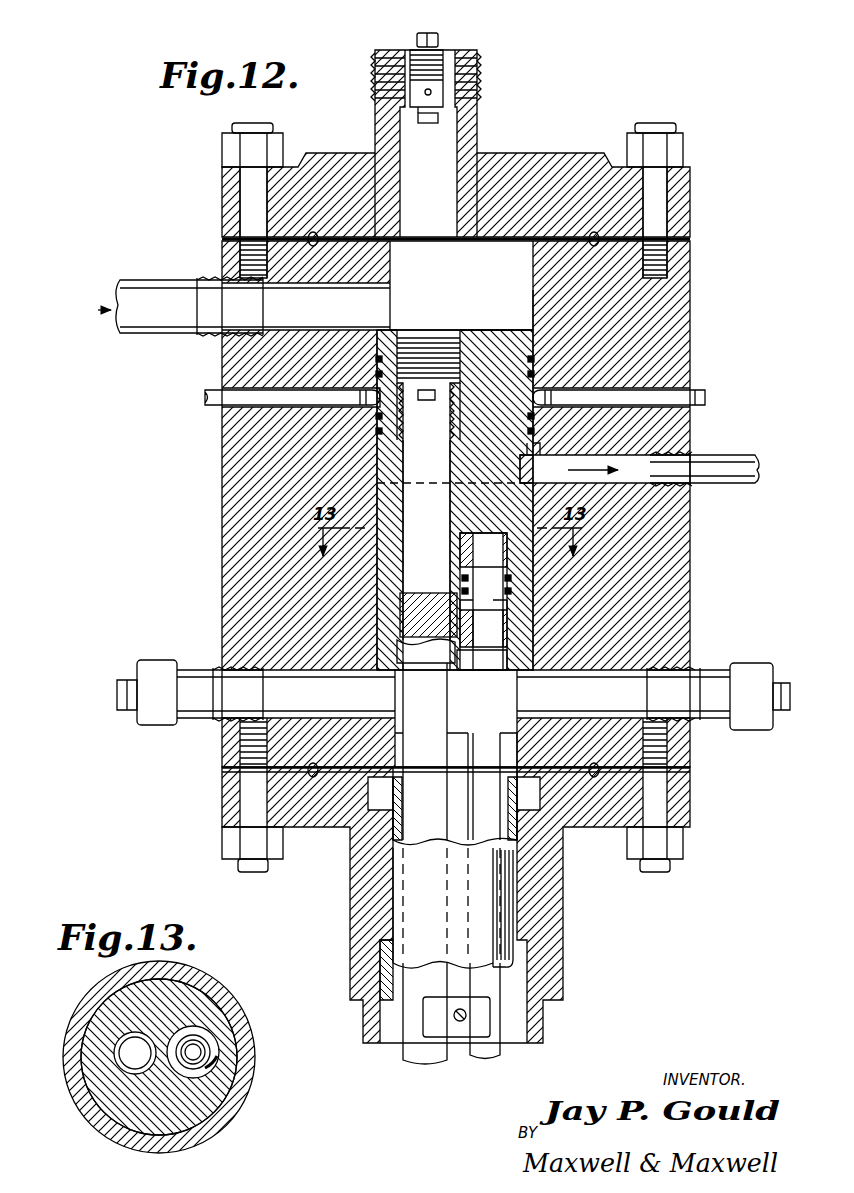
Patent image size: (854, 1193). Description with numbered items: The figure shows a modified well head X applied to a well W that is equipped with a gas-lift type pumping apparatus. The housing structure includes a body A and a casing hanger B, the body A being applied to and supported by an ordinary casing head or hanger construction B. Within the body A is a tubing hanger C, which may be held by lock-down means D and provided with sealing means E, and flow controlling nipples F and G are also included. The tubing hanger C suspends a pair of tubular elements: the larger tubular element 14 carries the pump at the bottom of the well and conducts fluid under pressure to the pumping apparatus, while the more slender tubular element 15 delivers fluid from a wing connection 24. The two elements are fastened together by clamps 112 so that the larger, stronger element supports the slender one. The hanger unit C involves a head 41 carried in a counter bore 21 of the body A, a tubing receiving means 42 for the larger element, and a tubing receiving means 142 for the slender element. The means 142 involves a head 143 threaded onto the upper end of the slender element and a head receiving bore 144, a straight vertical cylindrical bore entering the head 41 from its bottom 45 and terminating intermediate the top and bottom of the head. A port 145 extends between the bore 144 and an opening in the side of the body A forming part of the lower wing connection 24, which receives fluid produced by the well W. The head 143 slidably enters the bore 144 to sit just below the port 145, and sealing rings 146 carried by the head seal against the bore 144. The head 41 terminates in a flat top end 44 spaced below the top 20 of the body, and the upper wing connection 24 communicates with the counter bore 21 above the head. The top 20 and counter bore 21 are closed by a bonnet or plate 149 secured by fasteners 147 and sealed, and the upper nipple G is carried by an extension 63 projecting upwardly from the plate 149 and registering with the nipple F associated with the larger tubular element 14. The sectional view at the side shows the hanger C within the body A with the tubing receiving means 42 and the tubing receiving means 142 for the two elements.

In FIG. 12, the bonnet or plate 149 is at (526, 165).
In FIG. 12, the extension 63 is at (447, 145).
In FIG. 12, the upper flow controlling nipple G is at (465, 78).
In FIG. 12, the fasteners 147 is at (684, 150).
In FIG. 12, the top of the body 20 is at (481, 230).
In FIG. 12, the body A is at (421, 509).
In FIG. 13, the body A is at (174, 1057).
In FIG. 12, the well head X is at (158, 499).
In FIG. 12, the counter bore 21 is at (634, 310).
In FIG. 12, the tubing hanger C is at (455, 468).
In FIG. 13, the tubing hanger C is at (131, 1057).
In FIG. 12, the flat top end 44 is at (461, 299).
In FIG. 12, the head 41 is at (460, 369).
In FIG. 13, the head 41 is at (58, 1094).
In FIG. 12, the flow controlling nipple F is at (441, 348).
In FIG. 12, the lock-down means D is at (279, 415).
In FIG. 12, the sealing means E is at (346, 436).
In FIG. 12, the wing connection 24 is at (430, 366).
In FIG. 12, the port 145 is at (543, 460).
In FIG. 12, the tubing receiving means 42 is at (414, 700).
In FIG. 13, the tubing receiving means 42 is at (83, 1053).
In FIG. 12, the head 143 is at (510, 568).
In FIG. 13, the head 143 is at (213, 1063).
In FIG. 12, the sealing rings 146 is at (508, 594).
In FIG. 12, the head receiving bore 144 is at (510, 612).
In FIG. 13, the head receiving bore 144 is at (222, 1088).
In FIG. 12, the tubing receiving means 142 is at (513, 633).
In FIG. 13, the tubing receiving means 142 is at (219, 1048).
In FIG. 12, the bottom of the head 45 is at (512, 660).
In FIG. 12, the casing hanger B is at (456, 905).
In FIG. 12, the well W is at (506, 932).
In FIG. 12, the tubular element 14 is at (395, 1017).
In FIG. 12, the tubular element 15 is at (529, 1011).
In FIG. 12, the clamps 112 is at (428, 1018).